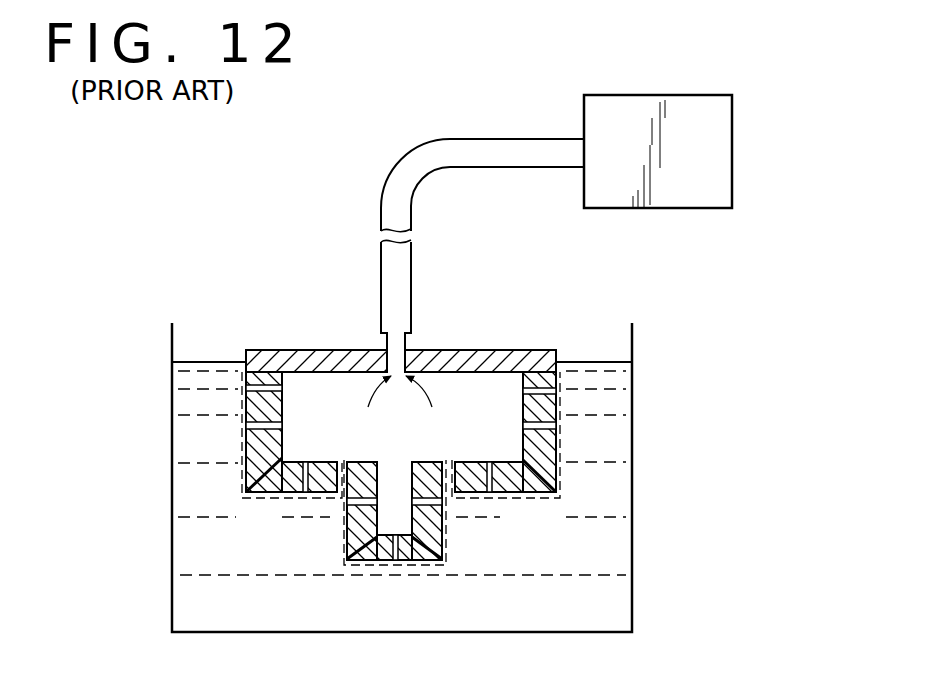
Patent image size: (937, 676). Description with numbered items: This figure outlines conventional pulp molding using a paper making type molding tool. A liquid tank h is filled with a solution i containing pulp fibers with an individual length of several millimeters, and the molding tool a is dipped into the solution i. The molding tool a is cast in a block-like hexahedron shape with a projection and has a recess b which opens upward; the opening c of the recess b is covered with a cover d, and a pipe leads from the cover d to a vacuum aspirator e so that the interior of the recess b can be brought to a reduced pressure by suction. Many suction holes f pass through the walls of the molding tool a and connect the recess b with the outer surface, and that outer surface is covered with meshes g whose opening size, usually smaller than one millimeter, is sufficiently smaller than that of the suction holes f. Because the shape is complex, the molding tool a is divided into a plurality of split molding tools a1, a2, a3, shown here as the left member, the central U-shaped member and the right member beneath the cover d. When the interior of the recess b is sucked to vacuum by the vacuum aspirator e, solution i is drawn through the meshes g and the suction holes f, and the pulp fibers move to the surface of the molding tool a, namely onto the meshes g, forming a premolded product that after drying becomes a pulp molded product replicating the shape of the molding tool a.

The molding tool a is at (572, 383).
The split molding tool a1 is at (288, 493).
The split molding tool a2 is at (443, 545).
The split molding tool a3 is at (515, 488).
The recess b is at (346, 437).
The opening c is at (285, 378).
The cover d is at (446, 352).
The vacuum aspirator e is at (647, 95).
The suction hole f is at (246, 428).
The mesh g is at (257, 500).
The liquid tank h is at (636, 397).
The solution i is at (612, 457).